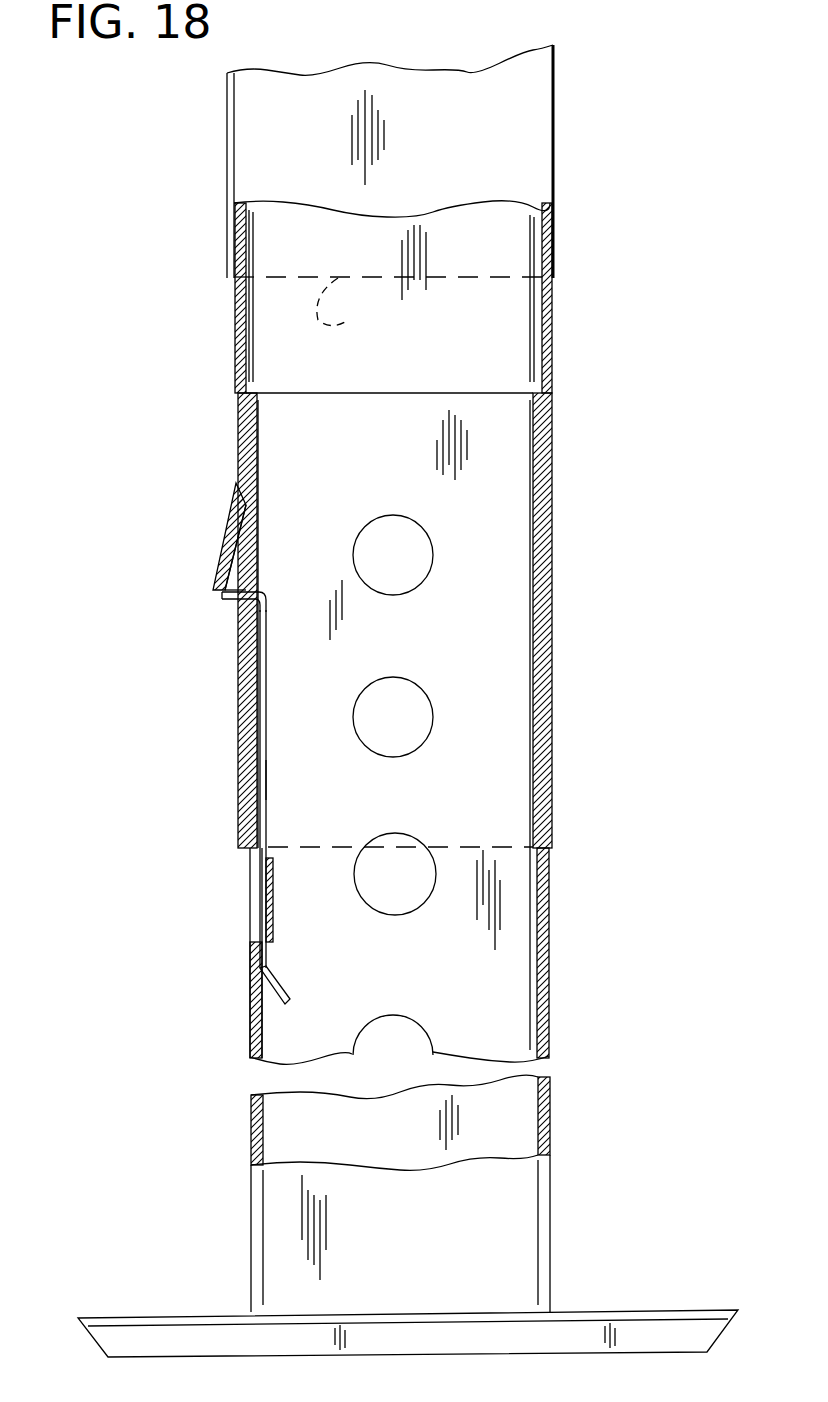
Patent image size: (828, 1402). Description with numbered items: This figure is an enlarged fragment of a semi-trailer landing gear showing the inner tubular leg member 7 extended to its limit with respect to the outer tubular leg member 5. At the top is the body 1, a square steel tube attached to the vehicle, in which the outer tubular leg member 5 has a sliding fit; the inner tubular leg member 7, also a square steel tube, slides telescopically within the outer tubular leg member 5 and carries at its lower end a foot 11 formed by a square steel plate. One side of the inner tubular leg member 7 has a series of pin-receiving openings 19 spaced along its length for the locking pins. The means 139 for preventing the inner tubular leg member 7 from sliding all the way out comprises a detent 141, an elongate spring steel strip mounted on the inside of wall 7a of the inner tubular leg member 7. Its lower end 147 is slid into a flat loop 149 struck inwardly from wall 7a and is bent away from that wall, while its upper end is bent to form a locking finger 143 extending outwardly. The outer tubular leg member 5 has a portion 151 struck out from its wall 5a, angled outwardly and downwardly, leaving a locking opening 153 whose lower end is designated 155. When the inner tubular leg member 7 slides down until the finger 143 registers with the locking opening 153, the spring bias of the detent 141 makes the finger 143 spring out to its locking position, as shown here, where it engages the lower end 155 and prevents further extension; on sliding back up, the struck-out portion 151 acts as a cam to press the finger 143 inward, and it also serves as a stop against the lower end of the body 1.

The body 1 is at (222, 143).
The outer tubular leg member 5 is at (553, 326).
The wall of outer tubular leg member 5a is at (235, 327).
The inner tubular leg member 7 is at (395, 393).
The wall of inner tubular leg member 7a is at (250, 1030).
The foot 11 is at (77, 1320).
The pin-receiving openings 19 is at (410, 572).
The means for preventing the inner tubular leg member from sliding out 139 is at (268, 782).
The detent 141 is at (268, 680).
The locking finger 143 is at (222, 596).
The lower end of the strip 147 is at (290, 1000).
The flat loop 149 is at (275, 940).
The struck-out portion 151 is at (234, 525).
The locking opening 153 is at (238, 557).
The lower end of the locking opening 155 is at (233, 604).